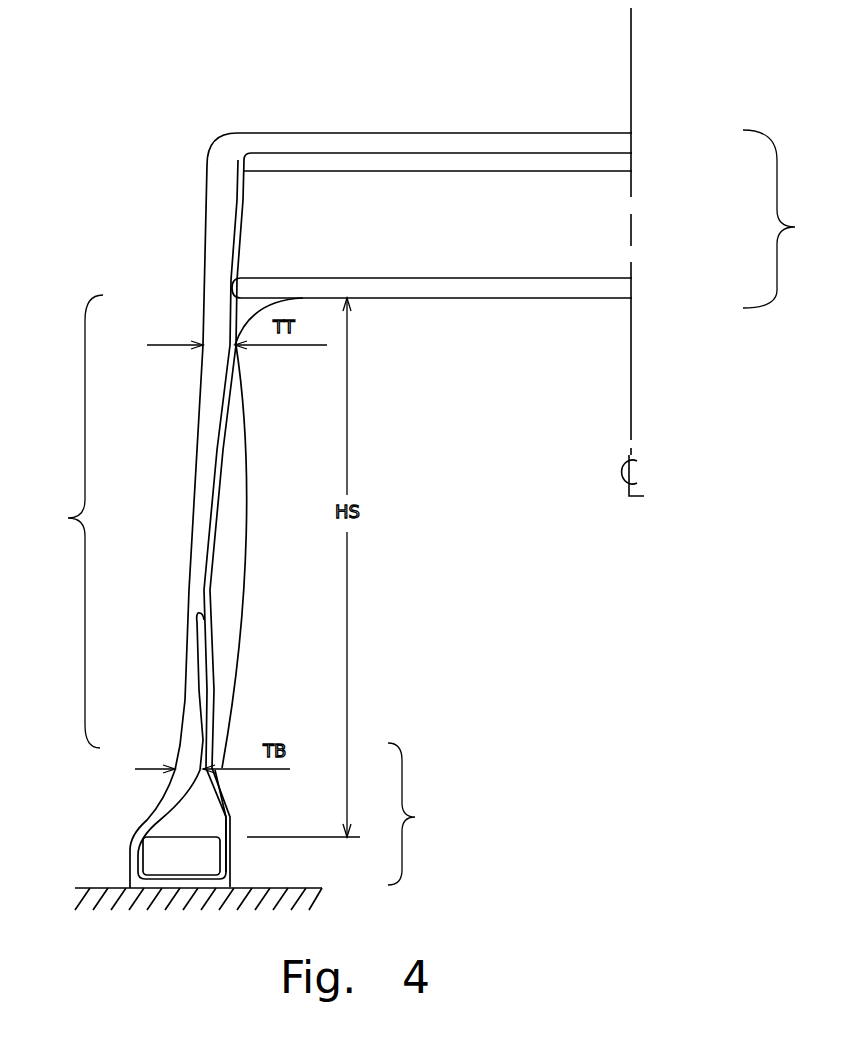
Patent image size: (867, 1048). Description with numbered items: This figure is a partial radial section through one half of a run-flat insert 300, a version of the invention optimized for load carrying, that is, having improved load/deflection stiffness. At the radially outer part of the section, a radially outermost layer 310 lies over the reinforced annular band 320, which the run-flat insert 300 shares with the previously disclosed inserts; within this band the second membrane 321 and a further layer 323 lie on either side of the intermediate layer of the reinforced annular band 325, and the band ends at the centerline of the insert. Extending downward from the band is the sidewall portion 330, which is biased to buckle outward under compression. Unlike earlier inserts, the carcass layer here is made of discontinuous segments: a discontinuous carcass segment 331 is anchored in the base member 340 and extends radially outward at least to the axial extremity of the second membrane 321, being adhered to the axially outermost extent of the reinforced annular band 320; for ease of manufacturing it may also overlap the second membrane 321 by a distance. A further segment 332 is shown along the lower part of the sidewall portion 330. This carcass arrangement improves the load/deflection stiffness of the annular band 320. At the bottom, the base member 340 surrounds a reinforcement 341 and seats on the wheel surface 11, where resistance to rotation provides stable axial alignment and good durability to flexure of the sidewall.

The wheel surface 11 is at (250, 887).
The run-flat insert 300 is at (497, 598).
The tread portion 310 is at (385, 142).
The reinforced annular band 320 is at (793, 219).
The second membrane 321 is at (605, 165).
The second belt layer 323 is at (550, 288).
The reinforced annular band 325 is at (577, 218).
The sidewall portion 330 is at (64, 521).
The discontinuous carcass segment 331 is at (213, 454).
The sidewall reinforcing strip 332 is at (200, 687).
The base member 340 is at (426, 814).
The bead core 341 is at (182, 855).